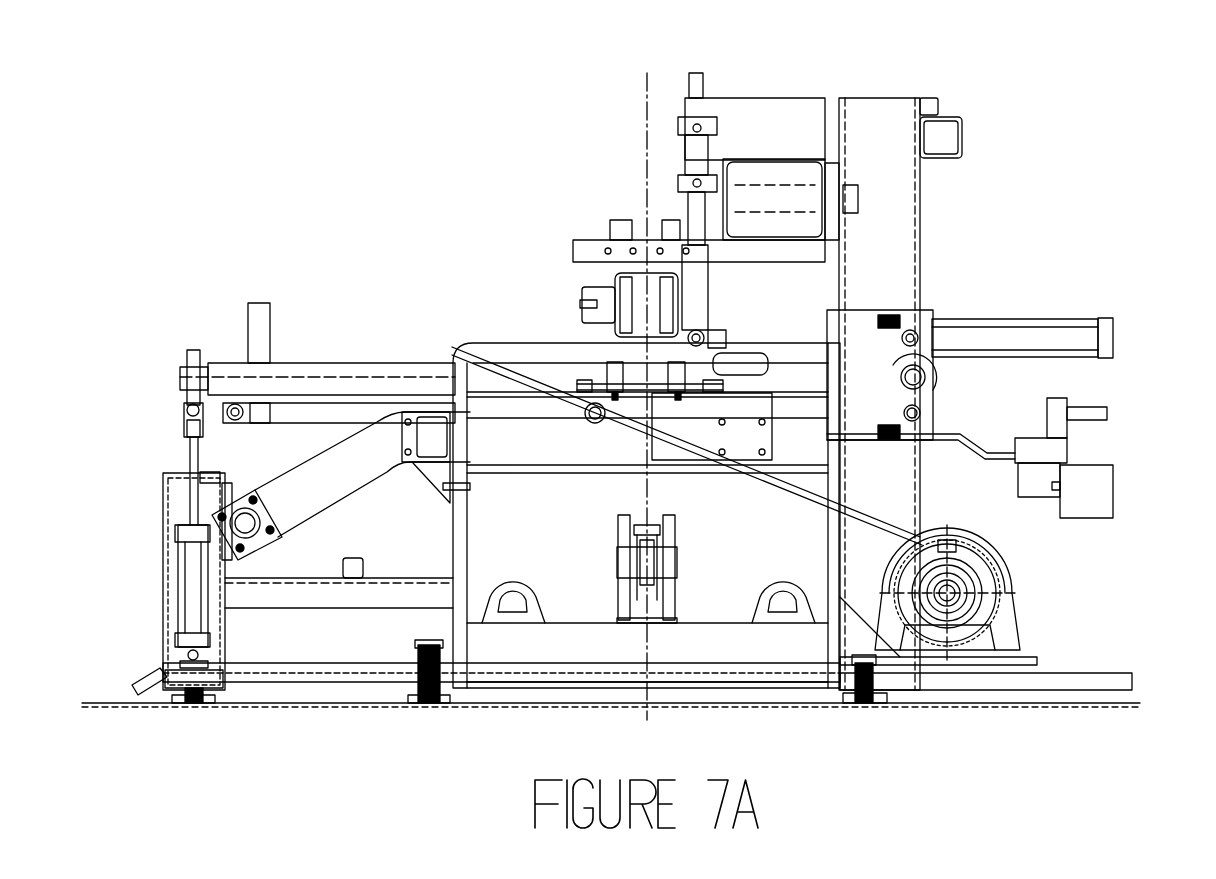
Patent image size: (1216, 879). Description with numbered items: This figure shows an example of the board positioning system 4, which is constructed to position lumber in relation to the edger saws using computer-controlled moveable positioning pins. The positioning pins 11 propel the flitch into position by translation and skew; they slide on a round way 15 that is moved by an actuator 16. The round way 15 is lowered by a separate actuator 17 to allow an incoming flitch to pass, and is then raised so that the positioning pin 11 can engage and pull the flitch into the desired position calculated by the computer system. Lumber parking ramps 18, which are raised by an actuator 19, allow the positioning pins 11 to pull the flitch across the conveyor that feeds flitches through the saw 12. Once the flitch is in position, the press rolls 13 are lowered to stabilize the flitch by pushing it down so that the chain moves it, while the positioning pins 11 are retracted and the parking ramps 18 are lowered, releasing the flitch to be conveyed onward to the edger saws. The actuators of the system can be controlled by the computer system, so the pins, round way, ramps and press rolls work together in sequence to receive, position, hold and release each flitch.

The positioning system 4 is at (878, 99).
The positioning pins 11 is at (250, 320).
The saw 12 is at (632, 357).
The press rolls 13 is at (615, 292).
The round way 15 is at (363, 365).
The actuator 16 is at (1095, 466).
The actuator 17 is at (182, 568).
The lumber parking ramps 18 is at (500, 343).
The actuator 19 is at (428, 455).